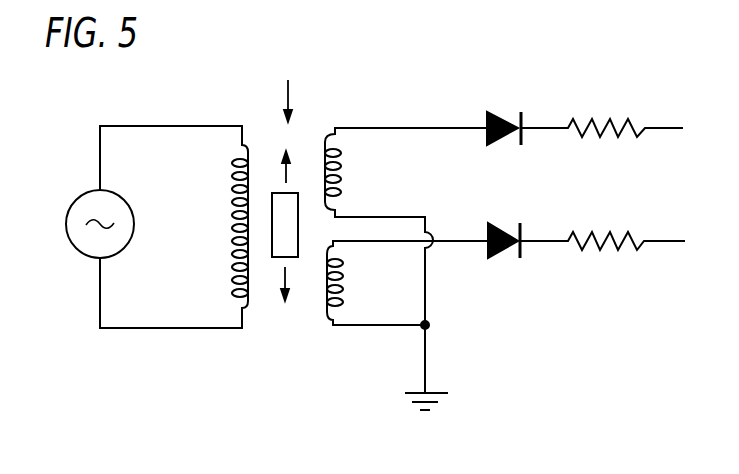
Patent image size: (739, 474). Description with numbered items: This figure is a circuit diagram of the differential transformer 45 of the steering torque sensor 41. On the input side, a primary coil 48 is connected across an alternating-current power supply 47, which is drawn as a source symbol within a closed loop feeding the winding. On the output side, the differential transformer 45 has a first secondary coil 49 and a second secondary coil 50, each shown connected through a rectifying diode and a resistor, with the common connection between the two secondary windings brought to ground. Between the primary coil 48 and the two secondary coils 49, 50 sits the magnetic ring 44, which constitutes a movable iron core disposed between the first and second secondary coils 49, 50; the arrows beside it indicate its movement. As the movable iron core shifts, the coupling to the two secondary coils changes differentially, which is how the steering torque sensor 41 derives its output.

The steering torque sensor 41 is at (420, 76).
The magnetic ring 44 is at (275, 248).
The differential transformer 45 is at (289, 178).
The alternating-current power supply 47 is at (130, 218).
The primary coil 48 is at (237, 217).
The first secondary coil 49 is at (340, 183).
The second secondary coil 50 is at (342, 290).